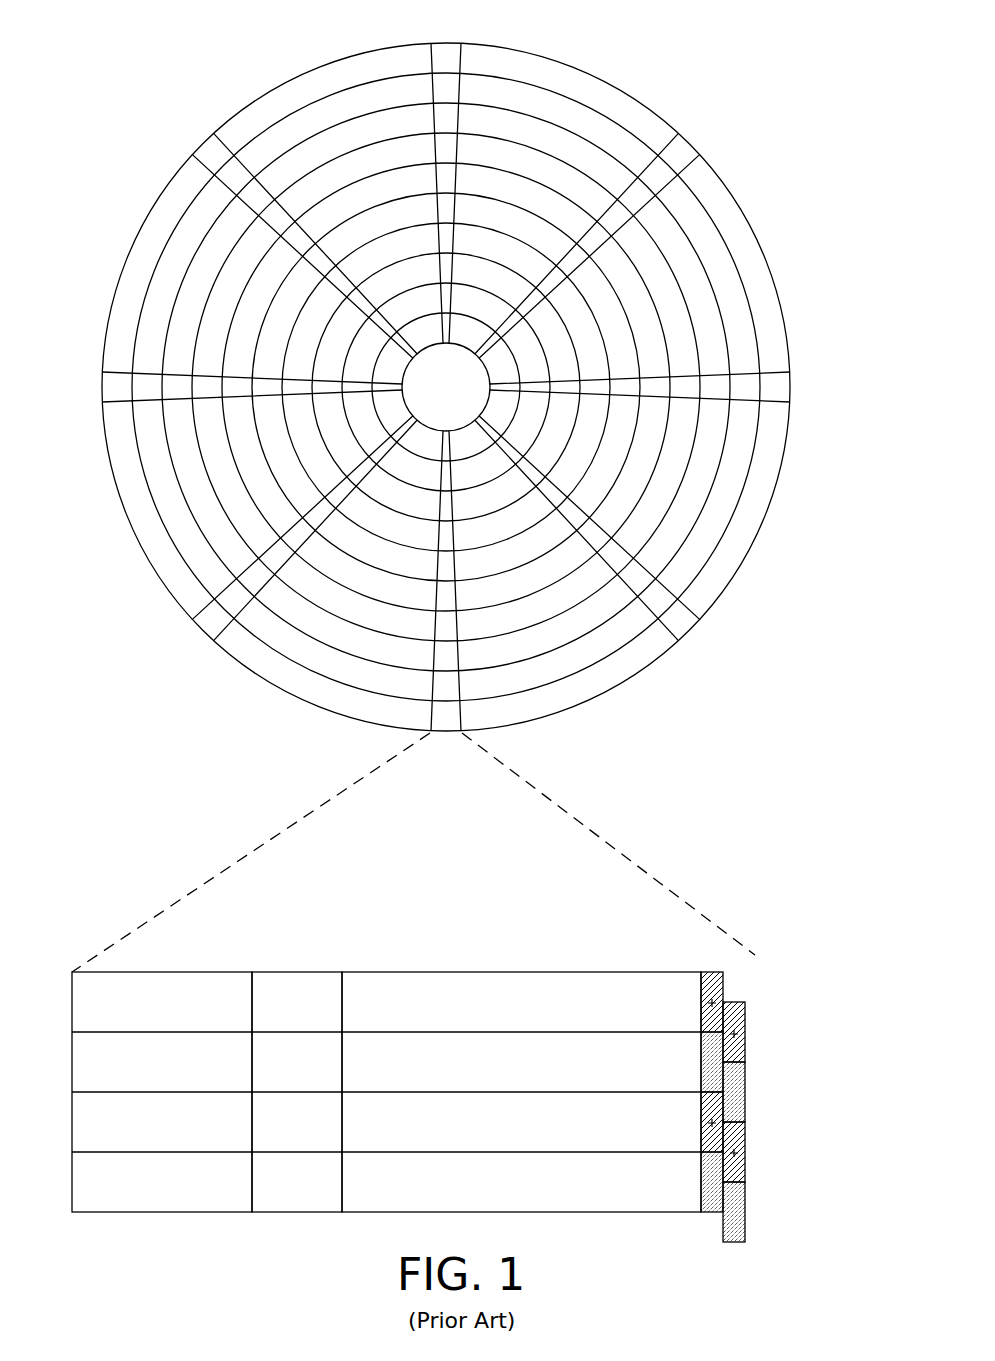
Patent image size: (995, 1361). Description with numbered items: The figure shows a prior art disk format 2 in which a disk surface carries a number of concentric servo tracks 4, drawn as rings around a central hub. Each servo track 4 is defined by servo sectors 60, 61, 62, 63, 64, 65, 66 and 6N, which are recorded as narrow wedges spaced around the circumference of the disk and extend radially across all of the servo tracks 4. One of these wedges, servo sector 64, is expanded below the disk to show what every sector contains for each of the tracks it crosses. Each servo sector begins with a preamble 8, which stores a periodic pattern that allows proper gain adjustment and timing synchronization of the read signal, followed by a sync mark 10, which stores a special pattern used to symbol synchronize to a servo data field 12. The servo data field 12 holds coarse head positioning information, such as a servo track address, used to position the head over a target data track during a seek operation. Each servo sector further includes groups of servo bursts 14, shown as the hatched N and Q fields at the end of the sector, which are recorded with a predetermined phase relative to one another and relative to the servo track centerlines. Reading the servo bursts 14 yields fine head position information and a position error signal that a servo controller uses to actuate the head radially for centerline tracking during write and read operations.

The disk format 2 is at (191, 47).
The servo track 4 is at (587, 92).
The servo sector 60 is at (447, 52).
The servo sector 61 is at (682, 152).
The servo sector 62 is at (782, 389).
The servo sector 63 is at (685, 632).
The servo sector 64 is at (290, 813).
The servo sector 65 is at (205, 635).
The servo sector 66 is at (102, 388).
The servo sector 6N is at (208, 141).
The preamble 8 is at (170, 972).
The sync mark 10 is at (299, 972).
The servo data field 12 is at (508, 972).
The servo bursts 14 is at (743, 971).